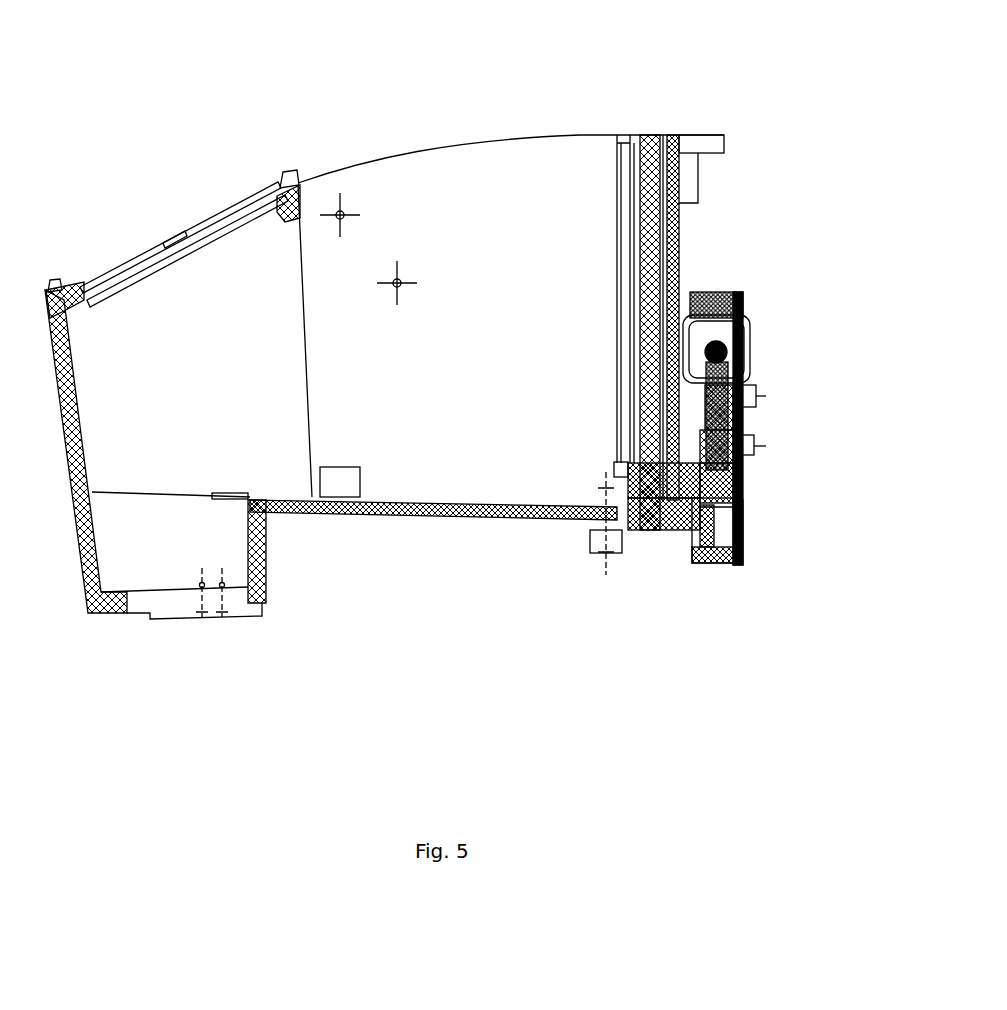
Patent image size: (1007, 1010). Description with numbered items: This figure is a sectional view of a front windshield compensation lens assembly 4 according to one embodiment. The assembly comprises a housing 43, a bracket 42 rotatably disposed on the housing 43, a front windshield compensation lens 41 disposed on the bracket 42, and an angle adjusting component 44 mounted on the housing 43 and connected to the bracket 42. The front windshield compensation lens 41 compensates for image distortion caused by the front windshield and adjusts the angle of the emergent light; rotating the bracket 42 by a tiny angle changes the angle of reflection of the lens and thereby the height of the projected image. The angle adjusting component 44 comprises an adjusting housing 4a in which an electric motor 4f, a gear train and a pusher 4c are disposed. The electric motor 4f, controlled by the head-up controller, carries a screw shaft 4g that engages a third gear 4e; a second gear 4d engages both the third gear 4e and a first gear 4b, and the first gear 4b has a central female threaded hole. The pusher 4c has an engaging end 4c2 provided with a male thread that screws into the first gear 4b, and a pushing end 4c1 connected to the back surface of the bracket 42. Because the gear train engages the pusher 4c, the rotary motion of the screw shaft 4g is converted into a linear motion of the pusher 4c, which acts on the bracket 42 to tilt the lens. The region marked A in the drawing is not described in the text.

The front windshield compensation lens assembly 4 is at (208, 184).
The front windshield compensation lens 41 is at (618, 345).
The bracket 42 is at (657, 136).
The housing 43 is at (411, 513).
The angle adjusting component 44 is at (740, 293).
The adjusting housing 4a is at (740, 527).
The first gear 4b is at (680, 530).
The pusher 4c is at (655, 528).
The pushing end 4c1 is at (616, 483).
The engaging end 4c2 is at (745, 505).
The second gear 4d is at (737, 457).
The third gear 4e is at (745, 395).
The electric motor 4f is at (727, 324).
The screw shaft 4g is at (740, 353).
The attachment point A is at (745, 440).